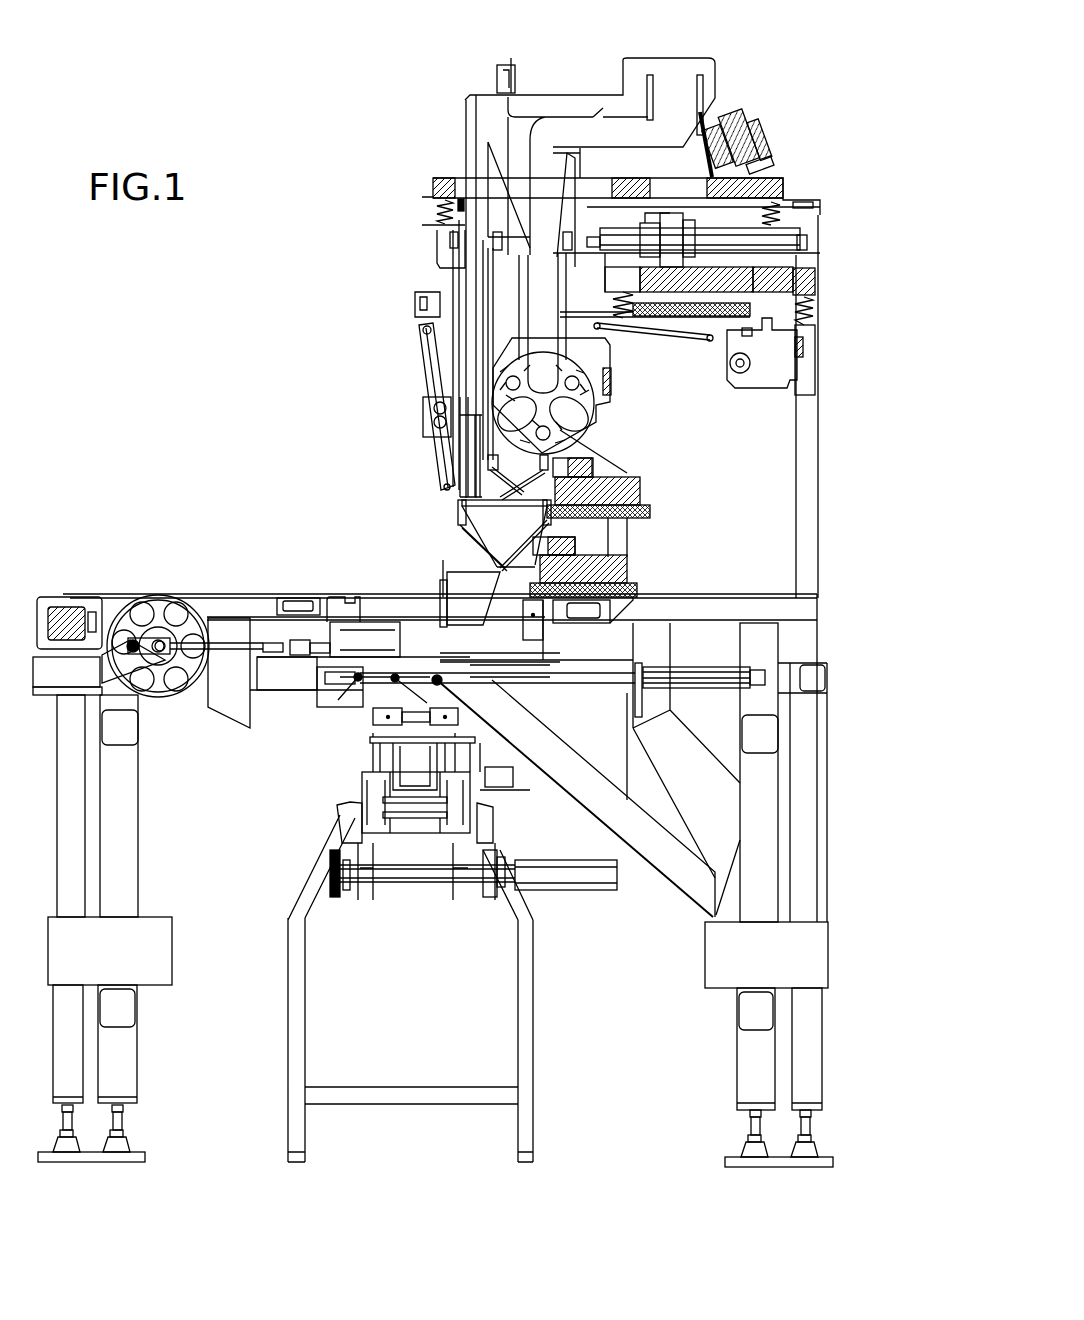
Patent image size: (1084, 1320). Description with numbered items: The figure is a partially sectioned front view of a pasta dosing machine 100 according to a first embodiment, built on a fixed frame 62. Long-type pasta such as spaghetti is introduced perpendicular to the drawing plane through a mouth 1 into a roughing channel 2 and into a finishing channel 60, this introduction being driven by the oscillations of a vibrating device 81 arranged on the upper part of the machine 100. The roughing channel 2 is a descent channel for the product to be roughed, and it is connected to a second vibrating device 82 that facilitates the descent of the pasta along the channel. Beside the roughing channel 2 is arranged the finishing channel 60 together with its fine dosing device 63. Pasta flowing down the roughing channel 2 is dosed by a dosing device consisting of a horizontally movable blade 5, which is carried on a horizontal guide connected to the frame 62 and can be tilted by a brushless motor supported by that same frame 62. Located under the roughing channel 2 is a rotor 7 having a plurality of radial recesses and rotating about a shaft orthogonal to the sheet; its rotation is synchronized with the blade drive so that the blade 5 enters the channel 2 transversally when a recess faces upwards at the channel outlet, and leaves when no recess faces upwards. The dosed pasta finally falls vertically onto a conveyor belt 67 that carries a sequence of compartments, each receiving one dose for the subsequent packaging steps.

The dosing machine 100 is at (232, 345).
The mouth 1 is at (530, 192).
The finishing channel 60 is at (478, 220).
The roughing channel 2 is at (540, 313).
The blade 5 is at (600, 355).
The rotor 7 is at (602, 418).
The fine dosing device 63 is at (412, 406).
The fixed frame 62 is at (808, 508).
The vibrating device 81 is at (720, 107).
The second vibrating device 82 is at (700, 218).
The conveyor belt 67 is at (348, 783).